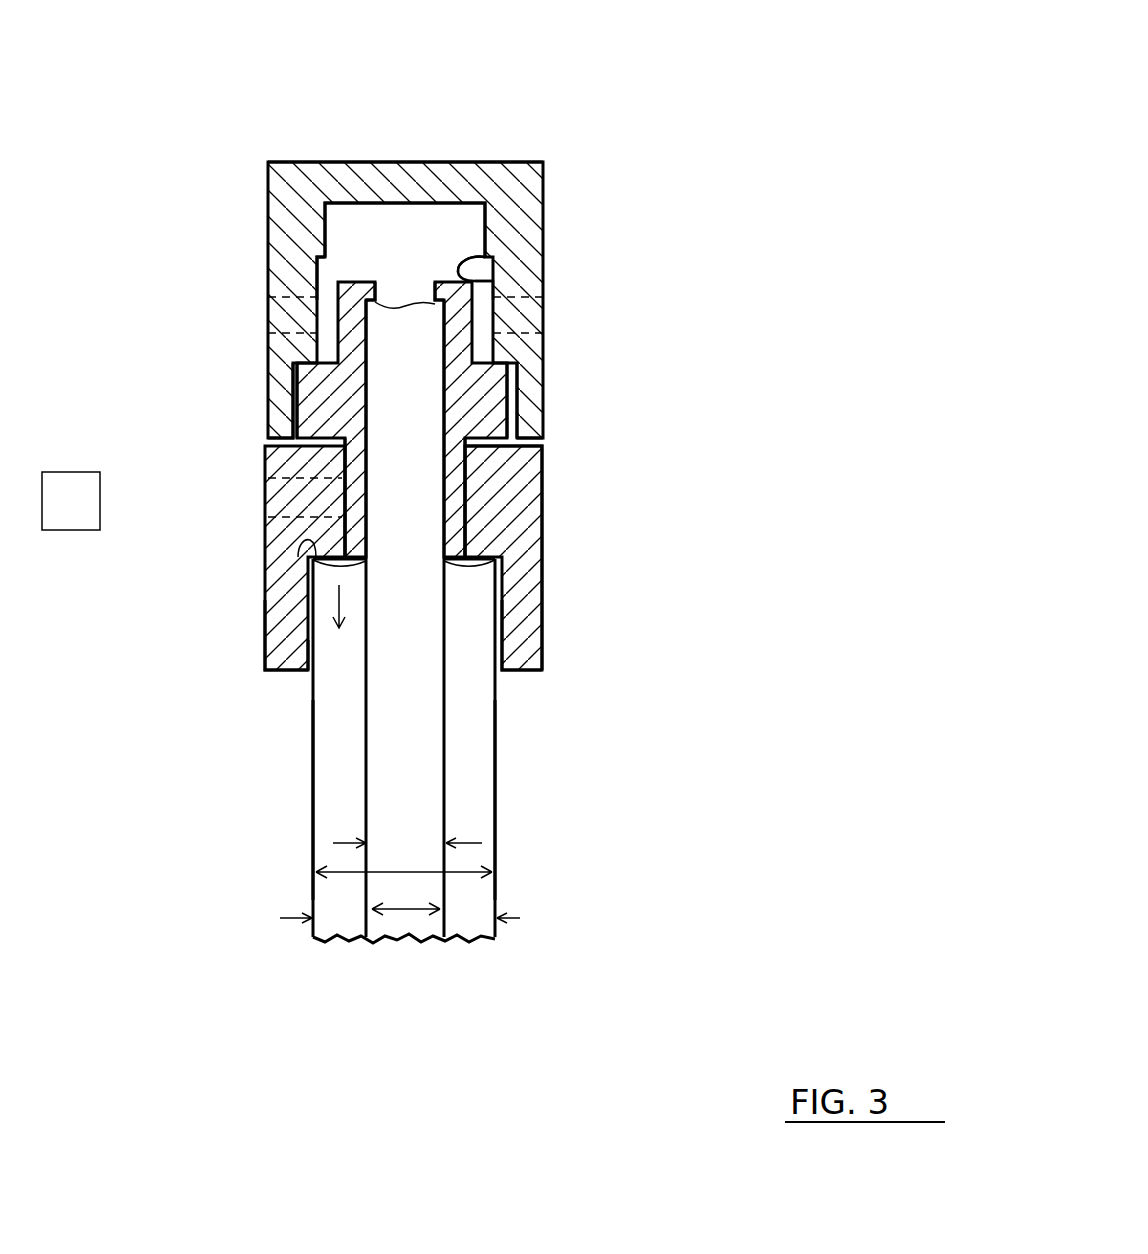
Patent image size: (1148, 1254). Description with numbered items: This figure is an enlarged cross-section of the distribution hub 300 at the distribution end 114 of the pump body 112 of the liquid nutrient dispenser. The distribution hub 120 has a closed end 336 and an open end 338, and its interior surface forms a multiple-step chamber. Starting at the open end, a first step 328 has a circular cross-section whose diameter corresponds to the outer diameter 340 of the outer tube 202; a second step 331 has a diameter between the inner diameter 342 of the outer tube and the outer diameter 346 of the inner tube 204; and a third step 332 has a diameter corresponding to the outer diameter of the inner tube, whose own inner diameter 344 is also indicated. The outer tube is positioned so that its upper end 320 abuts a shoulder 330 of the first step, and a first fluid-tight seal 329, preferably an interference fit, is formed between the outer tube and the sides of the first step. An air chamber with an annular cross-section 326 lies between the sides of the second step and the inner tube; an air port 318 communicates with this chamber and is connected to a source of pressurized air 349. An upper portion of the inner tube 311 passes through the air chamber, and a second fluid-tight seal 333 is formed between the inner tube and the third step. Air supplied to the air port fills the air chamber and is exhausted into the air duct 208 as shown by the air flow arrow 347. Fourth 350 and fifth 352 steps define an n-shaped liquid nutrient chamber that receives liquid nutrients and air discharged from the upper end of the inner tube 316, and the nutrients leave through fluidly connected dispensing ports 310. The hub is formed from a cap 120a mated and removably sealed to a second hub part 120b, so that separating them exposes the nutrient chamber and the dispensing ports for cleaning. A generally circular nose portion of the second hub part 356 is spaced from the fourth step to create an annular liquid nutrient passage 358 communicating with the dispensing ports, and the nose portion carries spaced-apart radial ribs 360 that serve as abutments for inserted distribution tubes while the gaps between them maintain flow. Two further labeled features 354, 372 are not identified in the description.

The distribution hub 300 is at (779, 91).
The pump body 112 is at (505, 790).
The distribution end 114 is at (490, 603).
The distribution hub 120 is at (548, 473).
The first hub part or cap 120a is at (300, 158).
The second hub part 120b is at (526, 560).
The outer tube 202 is at (310, 797).
The inner tube 204 is at (370, 755).
The air duct 208 is at (472, 742).
The dispensing ports 310 is at (262, 320).
The upper portion of the inner tube 311 is at (500, 430).
The upper end of the inner tube 316 is at (397, 300).
The air port 318 is at (265, 498).
The upper end of the outer tube 320 is at (403, 568).
The air chamber 326 is at (453, 520).
The first step 328 is at (262, 652).
The first fluid-tight seal 329 is at (307, 675).
The shoulder 330 is at (300, 582).
The second step 331 is at (337, 527).
The third step 332 is at (362, 378).
The second fluid-tight seal 333 is at (447, 408).
The closed end 336 is at (530, 158).
The open end 338 is at (522, 675).
The outer diameter of the outer tube 340 is at (432, 917).
The inner diameter of the outer tube 342 is at (440, 871).
The inner diameter of the inner tube 344 is at (413, 912).
The outer diameter of the inner tube 346 is at (446, 841).
The air flow arrow 347 is at (348, 608).
The source of pressurized air 349 is at (252, 509).
The fourth step 350 is at (480, 280).
The fifth step 352 is at (470, 228).
The cap lower lip 354 is at (290, 420).
The nose portion of the second hub part 356 is at (310, 257).
The annular liquid nutrient passage 358 is at (482, 305).
The radial ribs 360 is at (480, 252).
The bore top surface 372 is at (360, 215).